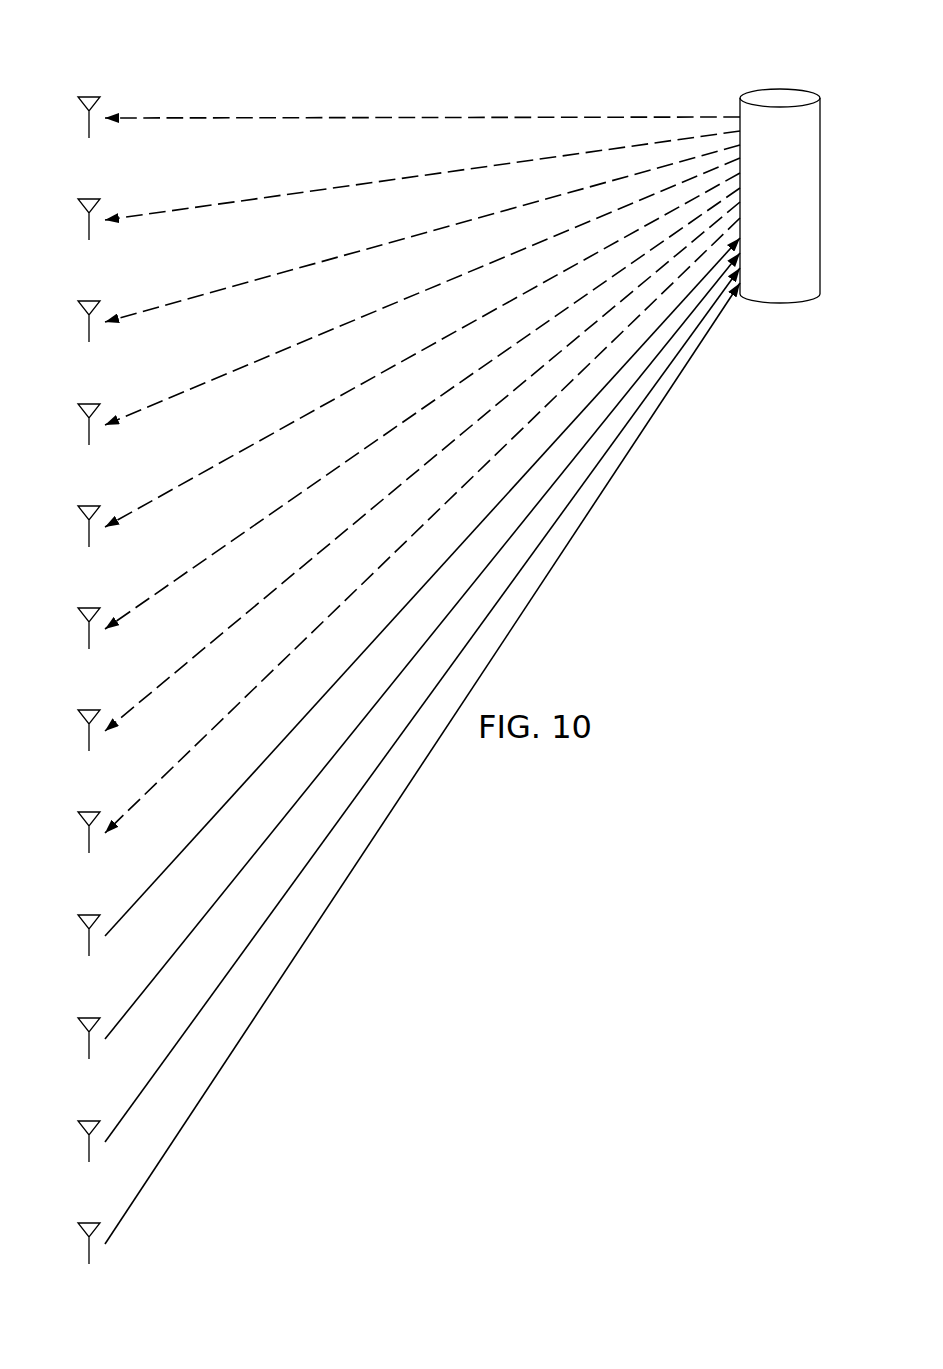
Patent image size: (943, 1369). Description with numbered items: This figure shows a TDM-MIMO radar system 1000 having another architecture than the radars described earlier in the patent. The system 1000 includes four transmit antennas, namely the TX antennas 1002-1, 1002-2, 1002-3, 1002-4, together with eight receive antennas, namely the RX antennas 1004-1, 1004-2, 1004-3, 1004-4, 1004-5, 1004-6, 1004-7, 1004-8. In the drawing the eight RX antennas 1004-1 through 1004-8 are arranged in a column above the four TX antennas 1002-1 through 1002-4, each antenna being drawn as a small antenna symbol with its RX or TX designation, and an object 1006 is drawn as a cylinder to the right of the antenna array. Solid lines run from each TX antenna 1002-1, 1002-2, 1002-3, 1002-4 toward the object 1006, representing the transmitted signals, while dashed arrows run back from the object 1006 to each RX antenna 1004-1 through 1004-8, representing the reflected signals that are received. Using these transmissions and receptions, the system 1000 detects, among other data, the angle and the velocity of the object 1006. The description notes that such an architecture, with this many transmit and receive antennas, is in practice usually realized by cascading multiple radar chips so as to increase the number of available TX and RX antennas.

The TDM-MIMO system 1000 is at (210, 65).
The TX antenna 1002-1 is at (80, 915).
The TX antenna 1002-2 is at (80, 1018).
The TX antenna 1002-3 is at (80, 1121).
The TX antenna 1002-4 is at (80, 1223).
The RX antenna 1004-1 is at (80, 97).
The RX antenna 1004-2 is at (80, 199).
The RX antenna 1004-3 is at (80, 301).
The RX antenna 1004-4 is at (80, 404).
The RX antenna 1004-5 is at (80, 506).
The RX antenna 1004-6 is at (80, 608).
The RX antenna 1004-7 is at (80, 710).
The RX antenna 1004-8 is at (80, 812).
The object 1006 is at (784, 88).